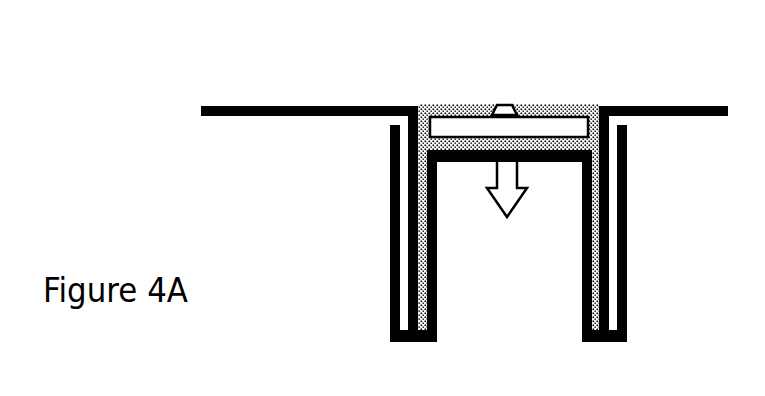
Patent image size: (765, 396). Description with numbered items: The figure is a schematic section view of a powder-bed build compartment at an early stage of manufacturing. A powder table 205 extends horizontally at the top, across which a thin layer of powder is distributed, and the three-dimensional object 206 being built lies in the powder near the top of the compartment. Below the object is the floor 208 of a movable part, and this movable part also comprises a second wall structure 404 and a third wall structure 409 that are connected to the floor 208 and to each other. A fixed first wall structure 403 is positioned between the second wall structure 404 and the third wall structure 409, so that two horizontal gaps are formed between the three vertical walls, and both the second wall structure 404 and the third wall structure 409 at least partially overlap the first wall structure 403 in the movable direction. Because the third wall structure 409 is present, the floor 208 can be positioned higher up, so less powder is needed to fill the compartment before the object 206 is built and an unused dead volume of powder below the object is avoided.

The powder table 205 is at (693, 106).
The three-dimensional object 206 is at (508, 103).
The floor 208 is at (477, 162).
The first wall structure 403 is at (410, 267).
The second wall structure 404 is at (393, 243).
The third wall structure 409 is at (437, 290).